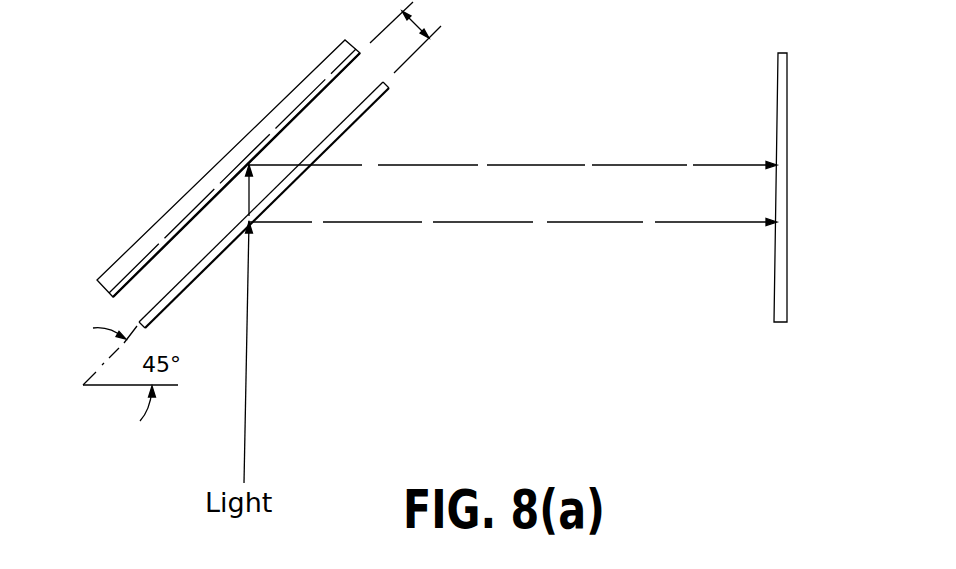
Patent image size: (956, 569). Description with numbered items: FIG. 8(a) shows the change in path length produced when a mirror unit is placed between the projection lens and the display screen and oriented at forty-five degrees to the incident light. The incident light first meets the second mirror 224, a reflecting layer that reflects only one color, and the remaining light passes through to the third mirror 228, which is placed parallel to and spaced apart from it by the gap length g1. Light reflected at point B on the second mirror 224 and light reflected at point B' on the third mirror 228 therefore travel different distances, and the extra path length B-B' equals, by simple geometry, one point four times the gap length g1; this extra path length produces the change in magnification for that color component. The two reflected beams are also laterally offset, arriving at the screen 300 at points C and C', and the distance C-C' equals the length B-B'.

The third mirror 228 is at (287, 116).
The second mirror 224 is at (374, 105).
The screen 300 is at (777, 308).
The gap length g1 is at (424, 27).
The point B is at (264, 352).
The point B' is at (241, 151).
The point C is at (512, 242).
The point C' is at (512, 148).